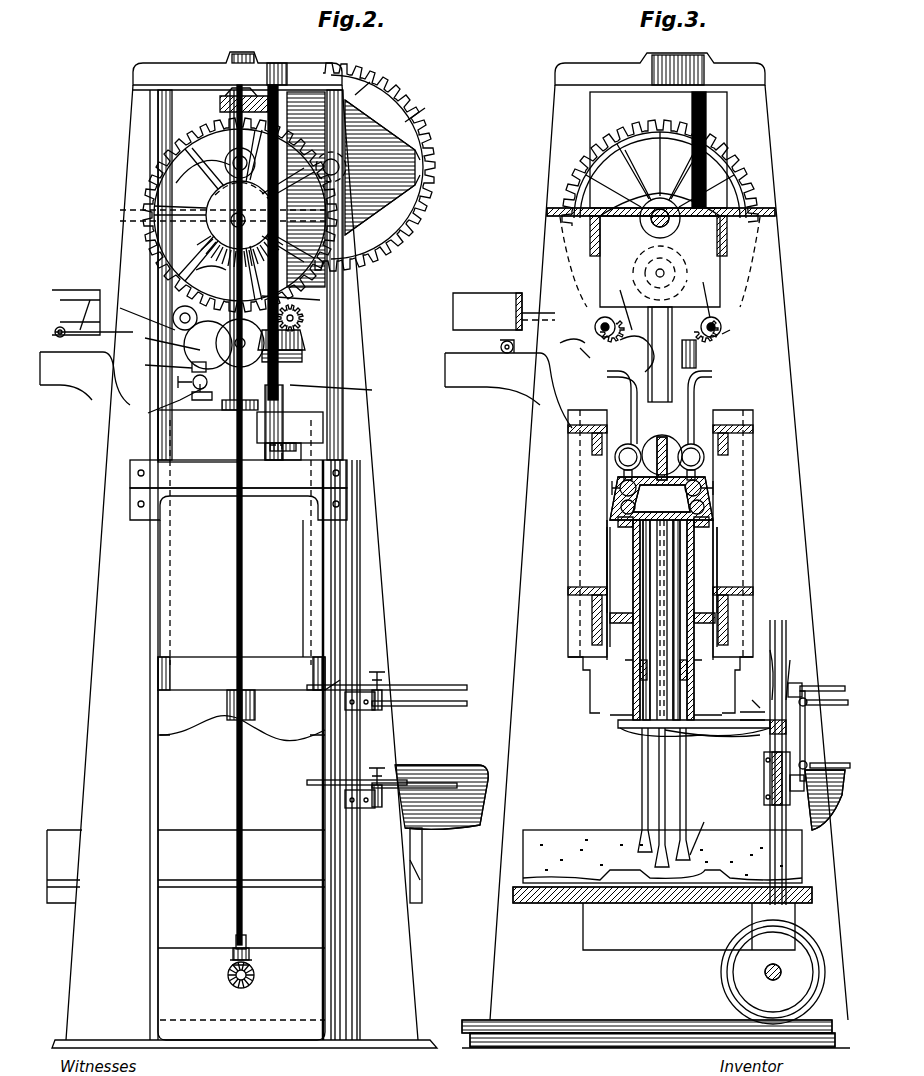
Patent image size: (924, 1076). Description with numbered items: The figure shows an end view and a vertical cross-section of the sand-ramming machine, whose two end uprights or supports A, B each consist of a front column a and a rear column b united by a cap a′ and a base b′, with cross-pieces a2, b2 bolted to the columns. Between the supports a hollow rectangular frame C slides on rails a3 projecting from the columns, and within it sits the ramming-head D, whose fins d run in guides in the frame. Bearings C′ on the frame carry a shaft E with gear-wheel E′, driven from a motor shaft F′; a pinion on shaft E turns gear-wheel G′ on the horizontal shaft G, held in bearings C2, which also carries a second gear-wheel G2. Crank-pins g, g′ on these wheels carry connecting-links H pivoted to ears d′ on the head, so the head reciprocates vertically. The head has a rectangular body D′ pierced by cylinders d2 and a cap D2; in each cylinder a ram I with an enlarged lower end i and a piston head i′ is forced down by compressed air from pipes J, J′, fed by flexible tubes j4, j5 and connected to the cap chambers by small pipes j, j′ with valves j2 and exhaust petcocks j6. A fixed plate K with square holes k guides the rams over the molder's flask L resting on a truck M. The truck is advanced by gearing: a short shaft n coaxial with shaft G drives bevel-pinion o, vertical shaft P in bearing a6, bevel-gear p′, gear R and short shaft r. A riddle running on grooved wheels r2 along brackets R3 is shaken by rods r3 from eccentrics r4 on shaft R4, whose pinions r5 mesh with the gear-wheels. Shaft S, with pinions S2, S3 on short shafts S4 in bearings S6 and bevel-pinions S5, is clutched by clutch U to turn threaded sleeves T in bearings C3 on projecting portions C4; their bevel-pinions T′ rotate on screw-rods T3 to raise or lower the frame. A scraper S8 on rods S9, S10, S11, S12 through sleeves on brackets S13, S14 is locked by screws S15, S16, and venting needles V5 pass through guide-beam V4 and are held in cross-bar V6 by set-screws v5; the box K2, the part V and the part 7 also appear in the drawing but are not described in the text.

In FIG. 2, the upright or support A is at (242, 566).
In FIG. 3, the upright or support B is at (659, 552).
In FIG. 2, the front leg or column a is at (308, 775).
In FIG. 2, the cap a′ is at (237, 71).
In FIG. 2, the cross-piece a2 is at (238, 490).
In FIG. 3, the cross-piece a2 is at (682, 565).
In FIG. 2, the rails or plates a3 is at (160, 223).
In FIG. 3, the rails or plates a3 is at (660, 595).
In FIG. 2, the bearing a6 is at (247, 945).
In FIG. 2, the rear leg or column b is at (185, 384).
In FIG. 3, the rear leg or column b is at (522, 552).
In FIG. 2, the base b′ is at (242, 1027).
In FIG. 3, the base b′ is at (656, 984).
In FIG. 2, the cross-piece b2 is at (241, 713).
In FIG. 2, the frame C is at (199, 450).
In FIG. 3, the frame C is at (661, 426).
In FIG. 3, the bearings C′ is at (596, 325).
In FIG. 3, the bearings C2 is at (648, 218).
In FIG. 2, the upstanding bearings C3 is at (300, 400).
In FIG. 2, the projecting portion C4 is at (300, 430).
In FIG. 3, the fins d is at (660, 69).
In FIG. 2, the ears d′ is at (164, 340).
In FIG. 3, the ears d′ is at (668, 445).
In FIG. 3, the cylindrical openings d2 is at (655, 596).
In FIG. 2, the ramming-head D is at (240, 402).
In FIG. 3, the ramming-head D is at (657, 619).
In FIG. 3, the rectangular body D′ is at (640, 560).
In FIG. 3, the cap D2 is at (662, 570).
In FIG. 2, the shaft E is at (380, 150).
In FIG. 2, the gear-wheel E′ is at (422, 110).
In FIG. 2, the shaft F′ is at (243, 112).
In FIG. 3, the horizontal shaft G is at (680, 220).
In FIG. 2, the gear-wheel G′ is at (205, 140).
In FIG. 3, the gear-wheel G2 is at (640, 135).
In FIG. 2, the crank-pin g is at (203, 176).
In FIG. 3, the crank-pin g′ is at (648, 270).
In FIG. 2, the connecting-link H is at (232, 165).
In FIG. 3, the connecting-link H is at (646, 354).
In FIG. 3, the ram I is at (642, 760).
In FIG. 3, the enlarged rectangular lower end i is at (699, 833).
In FIG. 3, the circular head or piston i′ is at (690, 666).
In FIG. 2, the compressed-air pipe J is at (224, 344).
In FIG. 3, the compressed-air pipe J is at (694, 452).
In FIG. 3, the compressed-air pipe J′ is at (626, 452).
In FIG. 3, the small pipe j is at (698, 473).
In FIG. 2, the small pipe j′ is at (166, 367).
In FIG. 3, the small pipe j′ is at (618, 473).
In FIG. 2, the valve j2 is at (165, 399).
In FIG. 3, the valve j2 is at (618, 490).
In FIG. 3, the flexible tube j4 is at (700, 406).
In FIG. 3, the flexible tube j5 is at (622, 405).
In FIG. 2, the petcock or exhaust-valve j6 is at (194, 396).
In FIG. 3, the petcock or exhaust-valve j6 is at (620, 505).
In FIG. 3, the fixed plate K is at (630, 735).
In FIG. 2, the box K2 is at (92, 296).
In FIG. 3, the box K2 is at (504, 311).
In FIG. 3, the square holes k is at (700, 735).
In FIG. 3, the molder's flask L is at (662, 845).
In FIG. 3, the truck M is at (662, 918).
In FIG. 2, the short shaft n is at (240, 215).
In FIG. 2, the bevel-pinion o is at (211, 267).
In FIG. 2, the vertical shaft P is at (242, 558).
In FIG. 2, the bevel-gear p′ is at (252, 962).
In FIG. 2, the bevel-gear R is at (250, 982).
In FIG. 2, the brackets R3 is at (95, 380).
In FIG. 3, the brackets R3 is at (508, 390).
In FIG. 2, the shaft R4 is at (231, 251).
In FIG. 3, the shaft R4 is at (564, 340).
In FIG. 2, the short shaft r is at (228, 977).
In FIG. 2, the grooved wheels r2 is at (57, 368).
In FIG. 3, the grooved wheels r2 is at (512, 355).
In FIG. 2, the rods r3 is at (87, 301).
In FIG. 3, the eccentrics r4 is at (583, 353).
In FIG. 3, the pinions r5 is at (623, 302).
In FIG. 2, the shaft S is at (305, 332).
In FIG. 3, the shaft S is at (722, 322).
In FIG. 2, the pinion S2 is at (300, 312).
In FIG. 3, the pinion S3 is at (695, 354).
In FIG. 3, the short shaft S4 is at (733, 328).
In FIG. 2, the bevel-pinion S5 is at (302, 352).
In FIG. 2, the bearings S6 is at (341, 387).
In FIG. 2, the scraper S8 is at (438, 830).
In FIG. 2, the rod S9 is at (414, 796).
In FIG. 3, the rod S9 is at (806, 718).
In FIG. 2, the rod S10 is at (448, 685).
In FIG. 3, the rod S10 is at (810, 686).
In FIG. 2, the rod S11 is at (455, 706).
In FIG. 3, the rod S11 is at (828, 725).
In FIG. 2, the rod S12 is at (482, 765).
In FIG. 3, the rod S12 is at (843, 820).
In FIG. 2, the bracket S13 is at (377, 806).
In FIG. 2, the bracket S14 is at (375, 706).
In FIG. 2, the set screw S15 is at (377, 768).
In FIG. 2, the set screw S16 is at (377, 672).
In FIG. 2, the threaded sleeve or nut T is at (258, 445).
In FIG. 2, the bevel-pinion T′ is at (290, 330).
In FIG. 2, the screw-threaded rod T3 is at (309, 297).
In FIG. 3, the screw-threaded rod T3 is at (545, 322).
In FIG. 3, the clutch U is at (705, 292).
In FIG. 3, the rod V is at (770, 842).
In FIG. 3, the cross guide-beam V4 is at (764, 785).
In FIG. 3, the wires or needles V5 is at (768, 672).
In FIG. 3, the set-screws v5 is at (795, 670).
In FIG. 3, the cross-bar V6 is at (790, 735).
In FIG. 3, the pin 7 is at (756, 701).